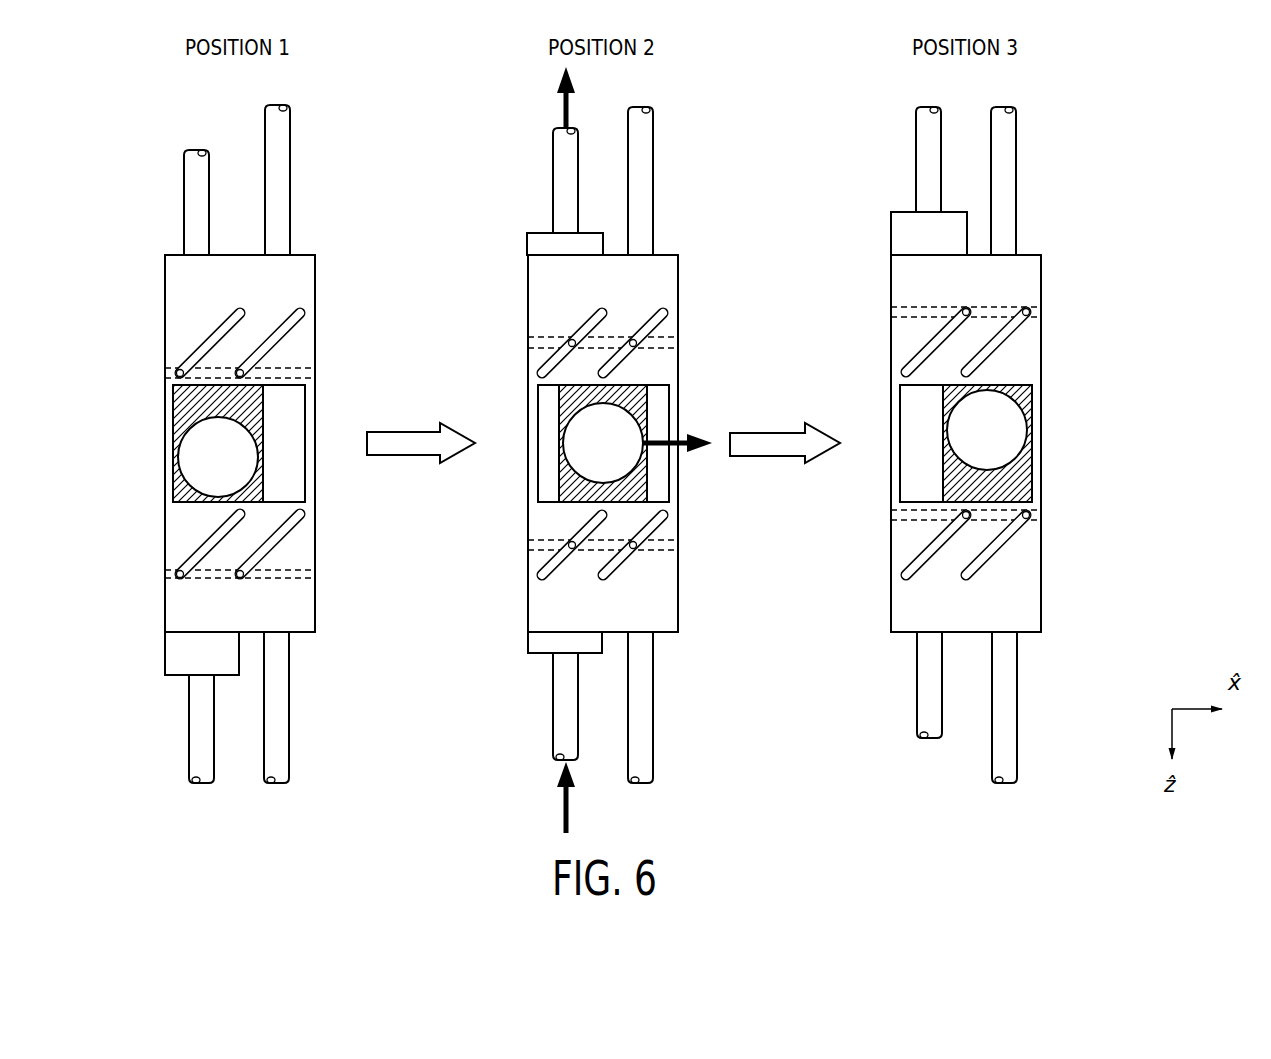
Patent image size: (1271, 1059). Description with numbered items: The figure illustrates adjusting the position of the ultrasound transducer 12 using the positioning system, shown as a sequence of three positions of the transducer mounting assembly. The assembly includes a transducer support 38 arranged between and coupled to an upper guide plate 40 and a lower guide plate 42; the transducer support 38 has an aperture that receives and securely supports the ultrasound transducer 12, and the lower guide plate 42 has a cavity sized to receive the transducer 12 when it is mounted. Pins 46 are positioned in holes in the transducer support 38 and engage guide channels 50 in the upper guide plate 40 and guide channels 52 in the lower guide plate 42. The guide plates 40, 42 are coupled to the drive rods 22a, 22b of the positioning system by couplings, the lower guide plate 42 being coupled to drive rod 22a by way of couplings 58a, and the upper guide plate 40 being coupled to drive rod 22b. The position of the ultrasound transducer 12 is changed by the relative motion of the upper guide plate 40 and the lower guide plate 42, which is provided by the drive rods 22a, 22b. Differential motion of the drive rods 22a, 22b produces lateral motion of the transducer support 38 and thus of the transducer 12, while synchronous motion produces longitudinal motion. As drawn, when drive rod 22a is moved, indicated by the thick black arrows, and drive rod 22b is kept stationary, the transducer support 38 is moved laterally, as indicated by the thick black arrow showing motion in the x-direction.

The ultrasound transducer 12 is at (178, 465).
The drive rod 22a is at (184, 187).
The drive rod 22b is at (290, 143).
The transducer support 38 is at (172, 412).
The upper guide plate 40 is at (165, 287).
The lower guide plate 42 is at (297, 473).
The pins 46 is at (570, 338).
The guide channels 50 is at (246, 306).
The guide channels 52 is at (318, 370).
The couplings 58a is at (177, 677).